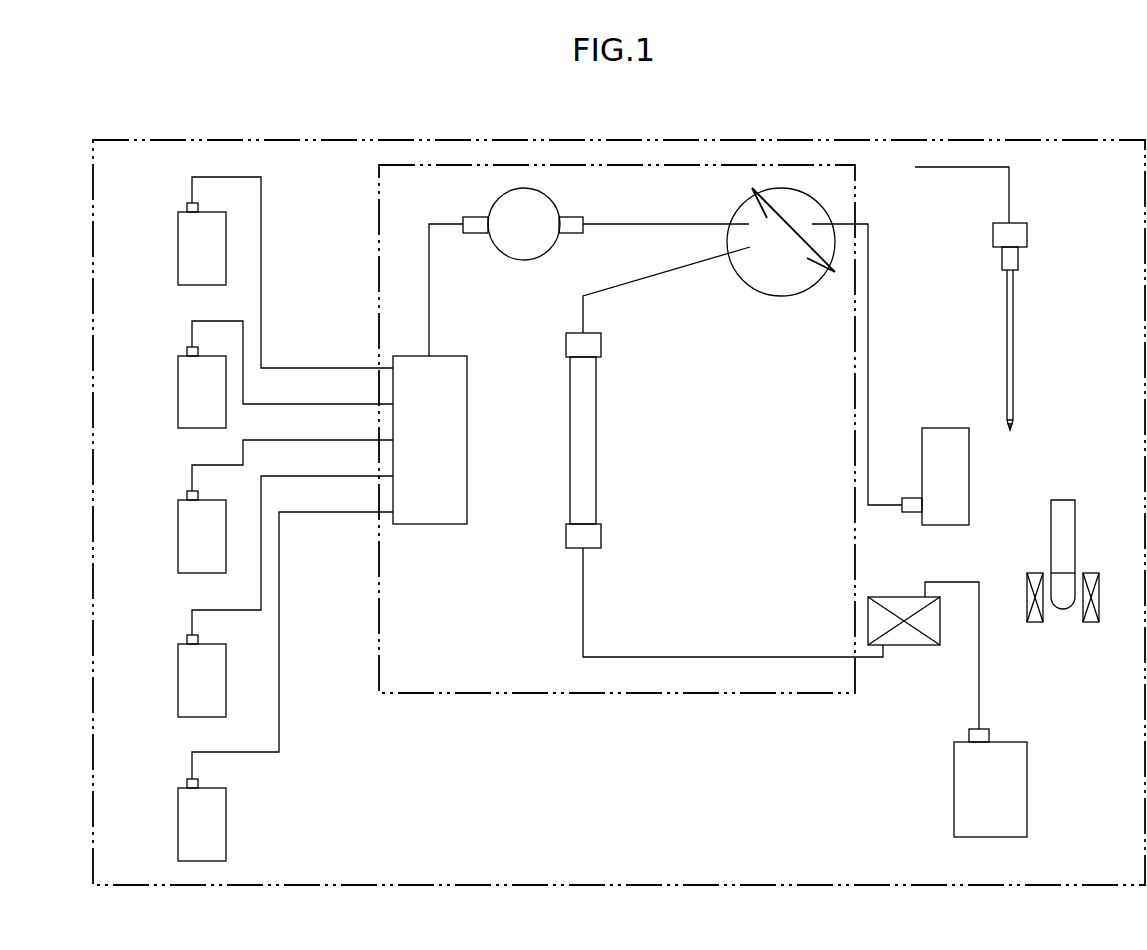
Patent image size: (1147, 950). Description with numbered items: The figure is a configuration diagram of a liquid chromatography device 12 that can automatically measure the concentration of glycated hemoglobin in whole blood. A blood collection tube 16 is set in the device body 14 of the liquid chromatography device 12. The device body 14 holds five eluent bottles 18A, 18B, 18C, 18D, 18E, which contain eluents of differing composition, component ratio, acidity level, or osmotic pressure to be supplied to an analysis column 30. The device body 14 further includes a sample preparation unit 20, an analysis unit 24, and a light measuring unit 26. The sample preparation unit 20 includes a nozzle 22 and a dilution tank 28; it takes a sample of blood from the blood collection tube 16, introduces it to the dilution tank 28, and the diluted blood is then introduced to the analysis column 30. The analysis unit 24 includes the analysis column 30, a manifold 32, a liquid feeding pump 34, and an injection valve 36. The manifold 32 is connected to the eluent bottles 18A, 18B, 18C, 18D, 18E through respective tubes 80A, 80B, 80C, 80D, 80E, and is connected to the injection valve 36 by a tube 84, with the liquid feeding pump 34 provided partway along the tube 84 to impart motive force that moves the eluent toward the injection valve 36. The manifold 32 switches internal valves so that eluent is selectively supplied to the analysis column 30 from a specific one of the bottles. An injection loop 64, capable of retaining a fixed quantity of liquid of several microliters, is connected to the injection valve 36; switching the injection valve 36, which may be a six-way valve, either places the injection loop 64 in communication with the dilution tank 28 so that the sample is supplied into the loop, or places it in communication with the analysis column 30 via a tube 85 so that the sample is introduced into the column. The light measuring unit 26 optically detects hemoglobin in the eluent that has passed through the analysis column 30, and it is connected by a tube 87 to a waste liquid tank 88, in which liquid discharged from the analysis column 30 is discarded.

The liquid chromatography device 12 is at (879, 98).
The device body 14 is at (749, 133).
The blood collection tube 16 is at (1076, 523).
The eluent bottle 18A is at (178, 246).
The eluent bottle 18B is at (178, 393).
The eluent bottle 18C is at (178, 535).
The eluent bottle 18D is at (178, 680).
The eluent bottle 18E is at (178, 820).
The sample preparation unit 20 is at (1033, 395).
The nozzle 22 is at (1006, 310).
The analysis unit 24 is at (601, 694).
The light measuring unit 26 is at (909, 649).
The dilution tank 28 is at (946, 427).
The analysis column 30 is at (597, 469).
The manifold 32 is at (468, 455).
The liquid feeding pump 34 is at (520, 262).
The injection valve 36 is at (781, 298).
The injection loop 64 is at (780, 217).
The tube 80A is at (223, 174).
The tube 80B is at (223, 319).
The tube 80C is at (223, 463).
The tube 80D is at (223, 608).
The tube 80E is at (252, 753).
The tube 84 is at (428, 303).
The tube 85 is at (600, 290).
The tube 87 is at (980, 661).
The waste liquid tank 88 is at (1028, 766).